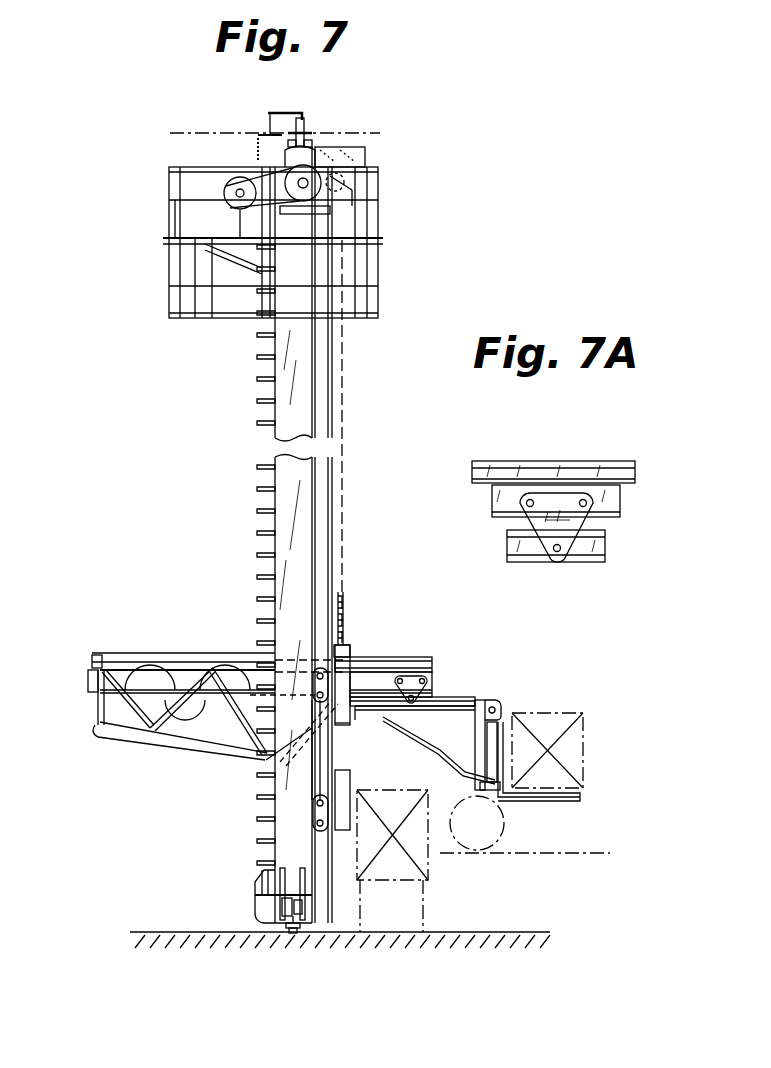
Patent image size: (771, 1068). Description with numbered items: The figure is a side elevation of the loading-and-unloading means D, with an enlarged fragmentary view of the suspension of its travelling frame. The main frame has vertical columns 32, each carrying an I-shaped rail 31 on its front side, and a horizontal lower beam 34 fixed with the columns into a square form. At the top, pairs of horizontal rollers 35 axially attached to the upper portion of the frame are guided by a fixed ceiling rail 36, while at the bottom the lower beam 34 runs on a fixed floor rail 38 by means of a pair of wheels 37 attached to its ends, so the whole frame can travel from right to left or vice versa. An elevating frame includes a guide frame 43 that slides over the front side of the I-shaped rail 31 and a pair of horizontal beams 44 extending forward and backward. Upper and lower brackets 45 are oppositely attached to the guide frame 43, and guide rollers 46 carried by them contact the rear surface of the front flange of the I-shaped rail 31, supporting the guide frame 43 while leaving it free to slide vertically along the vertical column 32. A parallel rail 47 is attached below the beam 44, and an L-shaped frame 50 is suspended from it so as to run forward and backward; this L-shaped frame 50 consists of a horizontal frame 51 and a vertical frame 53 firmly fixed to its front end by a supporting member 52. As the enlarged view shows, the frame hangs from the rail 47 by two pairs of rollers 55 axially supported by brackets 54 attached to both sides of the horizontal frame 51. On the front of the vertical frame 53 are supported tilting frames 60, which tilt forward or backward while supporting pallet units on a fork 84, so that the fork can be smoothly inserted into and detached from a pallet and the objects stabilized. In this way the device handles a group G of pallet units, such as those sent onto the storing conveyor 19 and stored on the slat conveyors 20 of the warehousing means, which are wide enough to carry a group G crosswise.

In FIG. 7, the storing conveyor 19 is at (425, 896).
In FIG. 7, the slat conveyor 20 is at (593, 796).
In FIG. 7, the I-shaped rail 31 is at (333, 548).
In FIG. 7, the vertical column 32 is at (256, 500).
In FIG. 7, the lower beam 34 is at (260, 900).
In FIG. 7, the horizontal roller 35 is at (312, 140).
In FIG. 7, the fixed ceiling rail 36 is at (305, 124).
In FIG. 7, the wheel 37 is at (288, 930).
In FIG. 7, the fixed floor rail 38 is at (296, 934).
In FIG. 7, the guide frame 43 is at (347, 760).
In FIG. 7, the horizontal beam 44 is at (368, 657).
In FIG. 7A, the horizontal beam 44 is at (497, 461).
In FIG. 7, the bracket 45 is at (317, 810).
In FIG. 7, the guide roller 46 is at (313, 668).
In FIG. 7, the parallel rail 47 is at (432, 690).
In FIG. 7A, the parallel rail 47 is at (620, 508).
In FIG. 7, the L-shaped frame 50 is at (397, 769).
In FIG. 7, the horizontal frame 51 is at (373, 708).
In FIG. 7A, the horizontal frame 51 is at (606, 548).
In FIG. 7, the supporting member 52 is at (465, 762).
In FIG. 7, the vertical frame 53 is at (485, 700).
In FIG. 7, the bracket 54 is at (410, 676).
In FIG. 7A, the bracket 54 is at (557, 505).
In FIG. 7, the roller 55 is at (430, 672).
In FIG. 7A, the roller 55 is at (622, 500).
In FIG. 7, the tilting frame 60 is at (500, 812).
In FIG. 7, the fork 84 is at (563, 803).
In FIG. 7, the loading-and-unloading means D is at (240, 368).
In FIG. 7, the group G is at (430, 852).